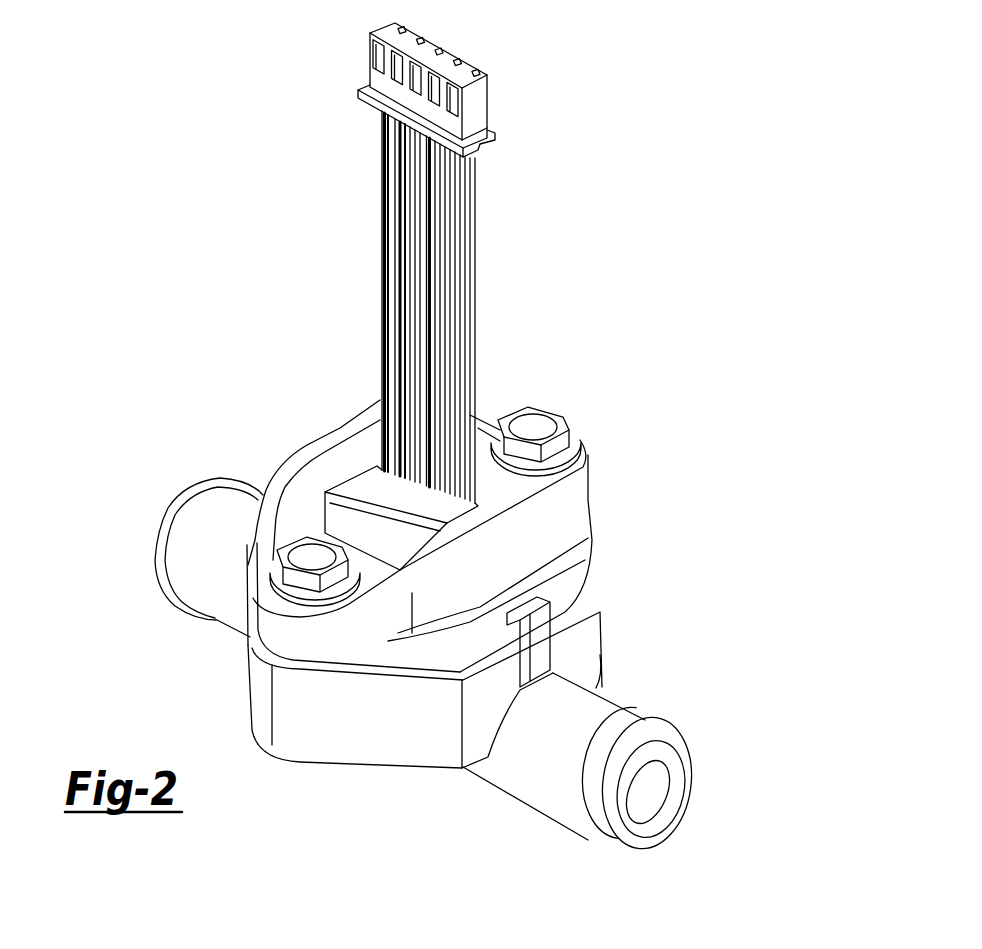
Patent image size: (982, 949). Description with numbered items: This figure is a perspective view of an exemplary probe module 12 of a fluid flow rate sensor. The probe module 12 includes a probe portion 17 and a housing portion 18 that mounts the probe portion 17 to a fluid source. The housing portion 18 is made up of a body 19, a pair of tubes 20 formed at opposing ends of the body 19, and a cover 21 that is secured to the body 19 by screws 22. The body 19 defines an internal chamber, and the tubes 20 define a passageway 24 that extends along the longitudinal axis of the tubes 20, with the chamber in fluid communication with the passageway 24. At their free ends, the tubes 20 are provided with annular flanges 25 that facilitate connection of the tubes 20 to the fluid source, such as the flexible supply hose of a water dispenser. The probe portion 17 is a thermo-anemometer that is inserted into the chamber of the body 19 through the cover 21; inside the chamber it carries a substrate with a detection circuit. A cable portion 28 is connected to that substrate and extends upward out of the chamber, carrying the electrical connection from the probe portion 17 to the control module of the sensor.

The probe module 12 is at (662, 127).
The probe portion 17 is at (340, 417).
The housing portion 18 is at (625, 629).
The body 19 is at (340, 764).
The tubes 20 is at (213, 623).
The cover 21 is at (590, 498).
The screws 22 is at (535, 427).
The passageway 24 is at (662, 777).
The annular flanges 25 is at (163, 591).
The cable portion 28 is at (471, 216).